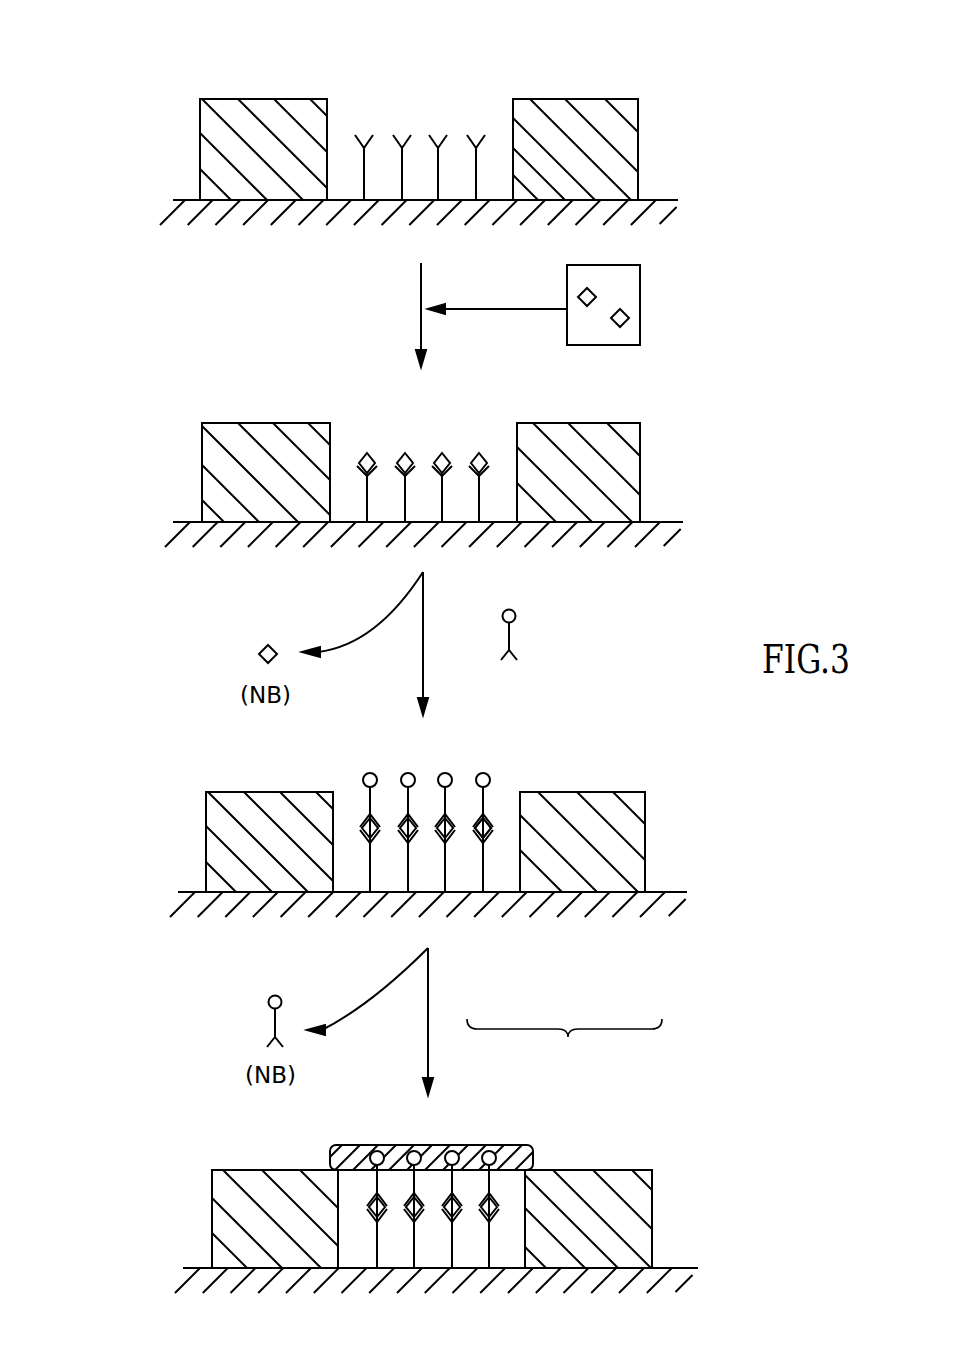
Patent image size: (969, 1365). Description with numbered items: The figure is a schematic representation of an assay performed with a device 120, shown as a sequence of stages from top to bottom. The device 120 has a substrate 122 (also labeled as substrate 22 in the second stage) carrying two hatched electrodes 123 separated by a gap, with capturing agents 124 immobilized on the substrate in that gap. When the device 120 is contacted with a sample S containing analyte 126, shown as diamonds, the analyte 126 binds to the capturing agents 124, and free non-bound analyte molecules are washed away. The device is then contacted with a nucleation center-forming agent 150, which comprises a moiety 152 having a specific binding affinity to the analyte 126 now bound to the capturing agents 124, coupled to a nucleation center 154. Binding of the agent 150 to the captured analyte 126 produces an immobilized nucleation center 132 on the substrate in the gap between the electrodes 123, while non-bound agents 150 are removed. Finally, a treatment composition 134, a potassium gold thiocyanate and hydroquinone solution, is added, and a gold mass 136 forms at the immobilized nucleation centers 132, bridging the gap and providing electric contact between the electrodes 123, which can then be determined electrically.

The device 120 is at (178, 70).
The substrate 122 is at (285, 203).
The substrate 22 is at (253, 525).
The electrodes 123 is at (270, 112).
The capturing agent 124 is at (367, 163).
The analyte 126 is at (604, 285).
The immobilized nucleation center 132 is at (353, 803).
The treatment composition 134 is at (564, 1020).
The gold mass 136 is at (435, 1147).
The nucleation center-forming agent 150 is at (398, 814).
The moiety 152 is at (510, 660).
The nucleation center 154 is at (511, 610).